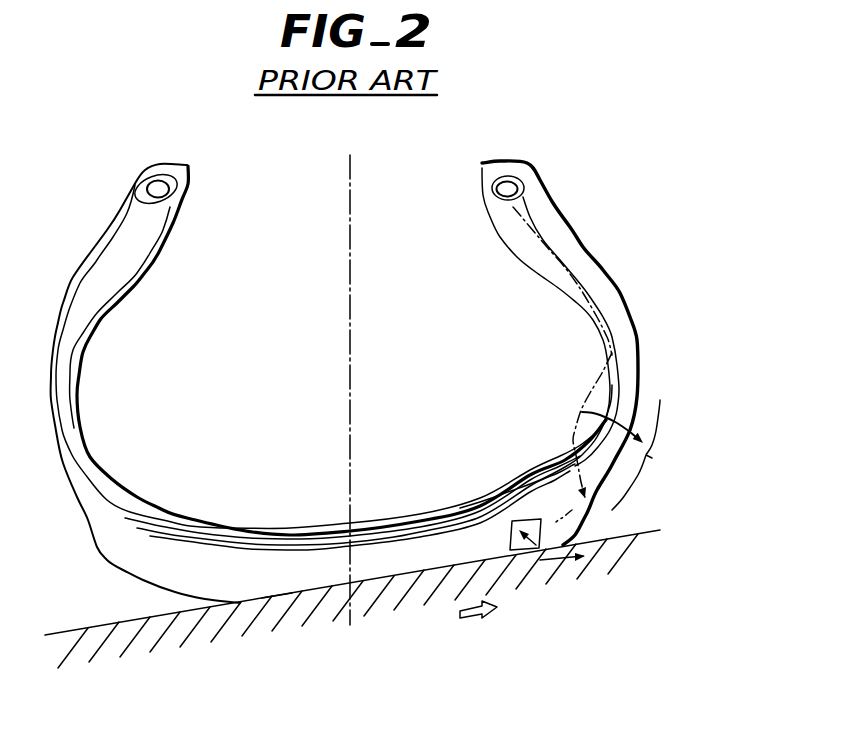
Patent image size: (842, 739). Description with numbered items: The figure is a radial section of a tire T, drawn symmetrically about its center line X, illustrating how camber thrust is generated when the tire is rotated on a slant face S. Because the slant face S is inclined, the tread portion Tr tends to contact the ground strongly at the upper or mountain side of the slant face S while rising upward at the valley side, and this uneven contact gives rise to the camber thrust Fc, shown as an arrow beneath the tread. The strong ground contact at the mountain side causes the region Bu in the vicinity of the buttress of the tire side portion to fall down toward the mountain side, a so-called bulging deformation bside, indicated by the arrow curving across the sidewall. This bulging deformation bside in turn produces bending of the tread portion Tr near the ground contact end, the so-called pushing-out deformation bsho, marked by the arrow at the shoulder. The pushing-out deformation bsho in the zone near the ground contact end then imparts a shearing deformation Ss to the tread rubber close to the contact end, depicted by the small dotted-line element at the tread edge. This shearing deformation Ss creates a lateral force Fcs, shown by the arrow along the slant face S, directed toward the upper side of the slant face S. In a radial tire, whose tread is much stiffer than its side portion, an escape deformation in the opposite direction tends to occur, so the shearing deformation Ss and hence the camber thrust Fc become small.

The tire T is at (583, 230).
The tire center line X is at (347, 394).
The slant face S is at (84, 628).
The tread portion Tr is at (280, 577).
The bulging deformation bside is at (630, 405).
The pushing-out deformation bsho is at (577, 469).
The region in the vicinity of the buttress Bu is at (647, 455).
The shearing deformation Ss is at (510, 543).
The camber thrust Fc is at (478, 628).
The lateral force Fcs is at (545, 562).